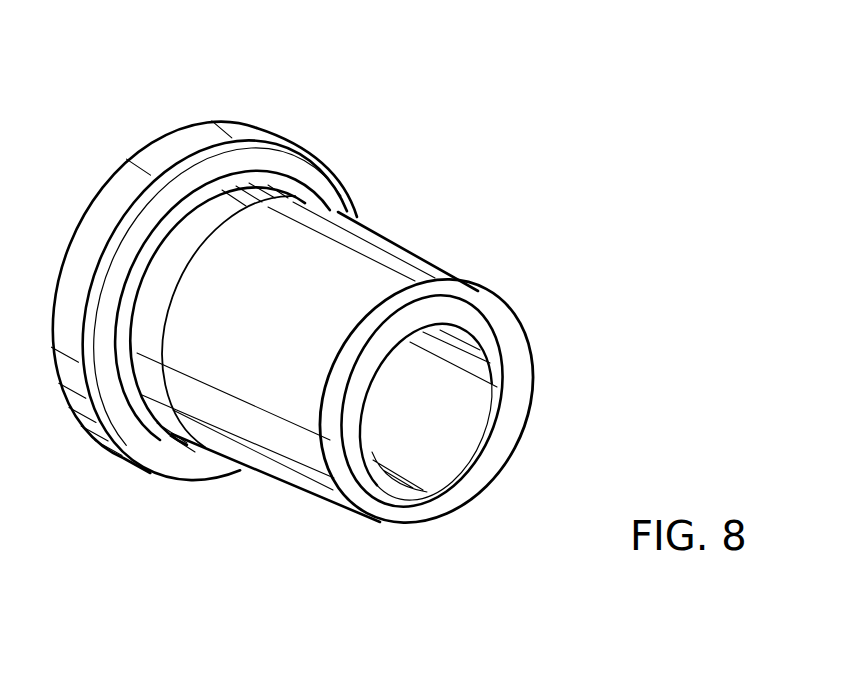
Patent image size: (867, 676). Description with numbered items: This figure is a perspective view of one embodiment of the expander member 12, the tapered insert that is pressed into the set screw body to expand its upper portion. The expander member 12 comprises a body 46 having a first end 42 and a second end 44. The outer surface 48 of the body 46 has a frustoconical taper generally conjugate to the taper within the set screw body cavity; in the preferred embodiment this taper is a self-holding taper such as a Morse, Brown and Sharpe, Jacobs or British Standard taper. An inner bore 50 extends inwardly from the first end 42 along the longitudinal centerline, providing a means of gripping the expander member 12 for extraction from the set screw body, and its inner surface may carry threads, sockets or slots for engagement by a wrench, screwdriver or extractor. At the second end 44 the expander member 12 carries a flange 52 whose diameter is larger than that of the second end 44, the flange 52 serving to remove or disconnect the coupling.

The expander member 12 is at (99, 74).
The first end 42 is at (497, 334).
The second end 44 is at (93, 231).
The body 46 is at (140, 468).
The outer surface 48 is at (352, 242).
The inner bore 50 is at (505, 437).
The flange 52 is at (262, 127).